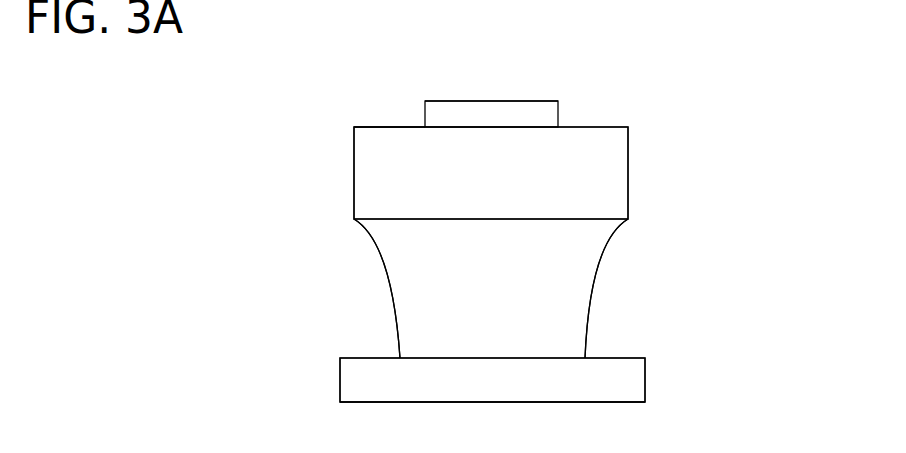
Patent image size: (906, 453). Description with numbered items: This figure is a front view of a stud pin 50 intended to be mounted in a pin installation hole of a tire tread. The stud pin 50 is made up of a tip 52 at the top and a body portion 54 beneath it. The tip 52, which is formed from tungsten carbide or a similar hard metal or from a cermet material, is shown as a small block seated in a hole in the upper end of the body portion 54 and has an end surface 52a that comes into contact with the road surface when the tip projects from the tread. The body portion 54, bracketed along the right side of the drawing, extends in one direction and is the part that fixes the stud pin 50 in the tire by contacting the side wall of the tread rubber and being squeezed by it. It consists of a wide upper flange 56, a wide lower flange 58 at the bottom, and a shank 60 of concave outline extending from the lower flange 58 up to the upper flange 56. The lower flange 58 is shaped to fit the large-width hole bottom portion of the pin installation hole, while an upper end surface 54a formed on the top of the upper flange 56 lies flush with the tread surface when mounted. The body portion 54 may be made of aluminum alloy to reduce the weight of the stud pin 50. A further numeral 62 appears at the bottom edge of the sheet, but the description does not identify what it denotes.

The stud pin 50 is at (700, 172).
The tip 52 is at (560, 112).
The end surface 52a is at (495, 101).
The body portion 54 is at (662, 125).
The upper end surface 54a is at (380, 127).
The upper flange 56 is at (366, 172).
The lower flange 58 is at (352, 377).
The shank 60 is at (402, 280).
The lower element 62 is at (492, 427).